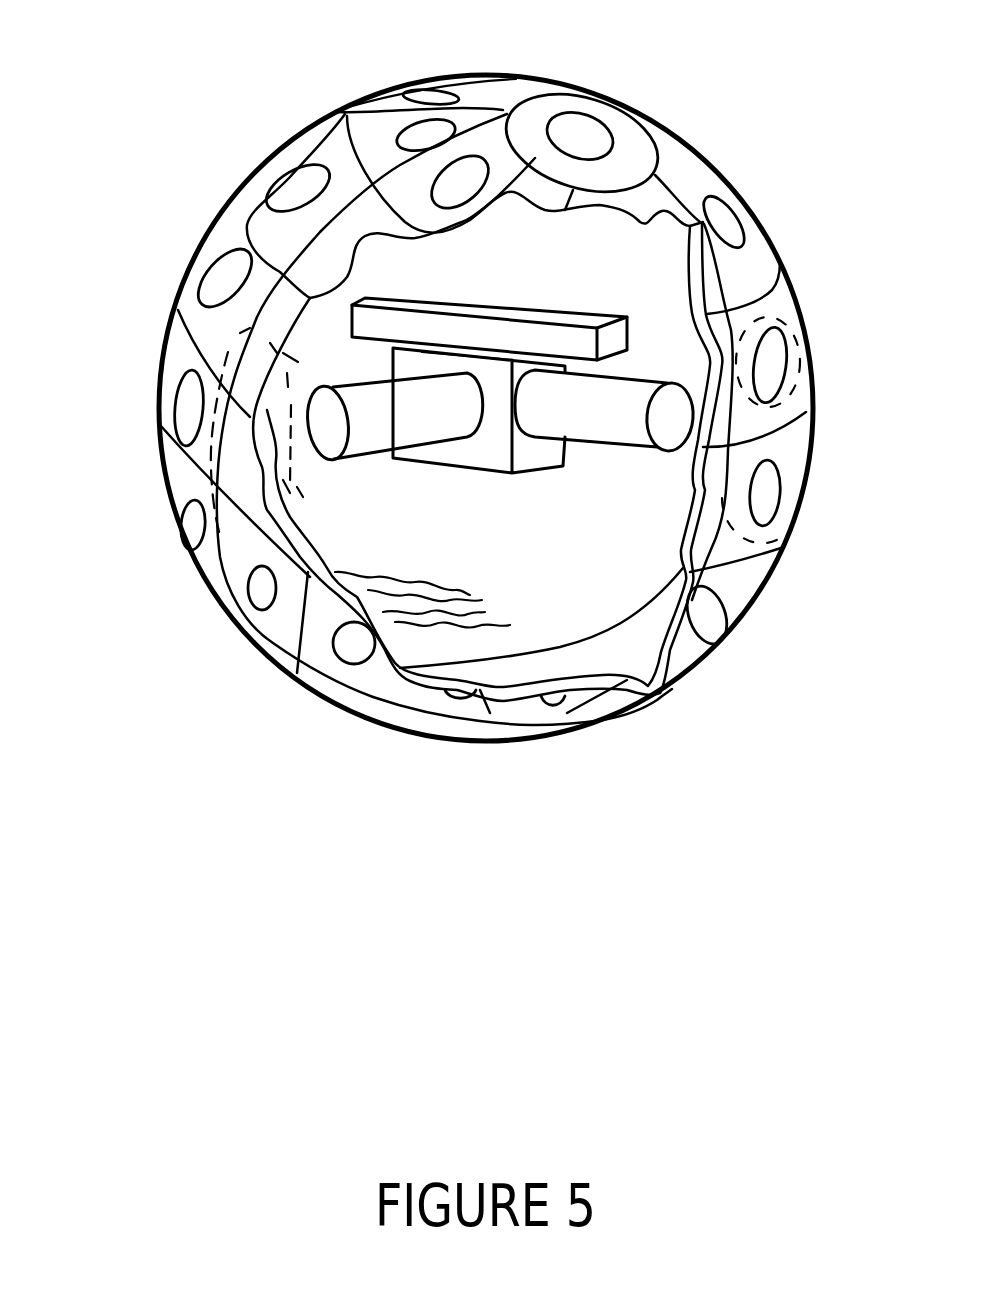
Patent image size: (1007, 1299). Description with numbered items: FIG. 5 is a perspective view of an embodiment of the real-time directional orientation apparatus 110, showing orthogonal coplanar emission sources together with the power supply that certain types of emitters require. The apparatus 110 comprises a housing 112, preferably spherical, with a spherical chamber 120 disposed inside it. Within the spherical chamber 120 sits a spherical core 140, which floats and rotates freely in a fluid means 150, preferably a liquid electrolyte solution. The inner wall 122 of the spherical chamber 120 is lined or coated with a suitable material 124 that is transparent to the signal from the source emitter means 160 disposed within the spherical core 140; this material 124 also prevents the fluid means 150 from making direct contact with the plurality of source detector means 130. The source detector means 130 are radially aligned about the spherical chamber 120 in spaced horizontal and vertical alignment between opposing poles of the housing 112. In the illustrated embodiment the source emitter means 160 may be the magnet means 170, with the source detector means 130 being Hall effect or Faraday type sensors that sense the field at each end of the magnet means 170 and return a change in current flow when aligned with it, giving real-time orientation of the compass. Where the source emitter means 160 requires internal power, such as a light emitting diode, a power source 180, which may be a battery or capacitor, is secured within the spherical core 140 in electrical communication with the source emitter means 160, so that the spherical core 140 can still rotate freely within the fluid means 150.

The real-time directional orientation apparatus 110 is at (466, 810).
The housing 112 is at (261, 652).
The spherical chamber 120 is at (559, 664).
The inner wall 122 is at (695, 319).
The material 124 is at (662, 632).
The source detector means 130 is at (221, 276).
The spherical core 140 is at (586, 637).
The fluid means 150 is at (442, 631).
The source emitter means 160 is at (328, 420).
The magnet means 170 is at (556, 318).
The power source 180 is at (487, 452).